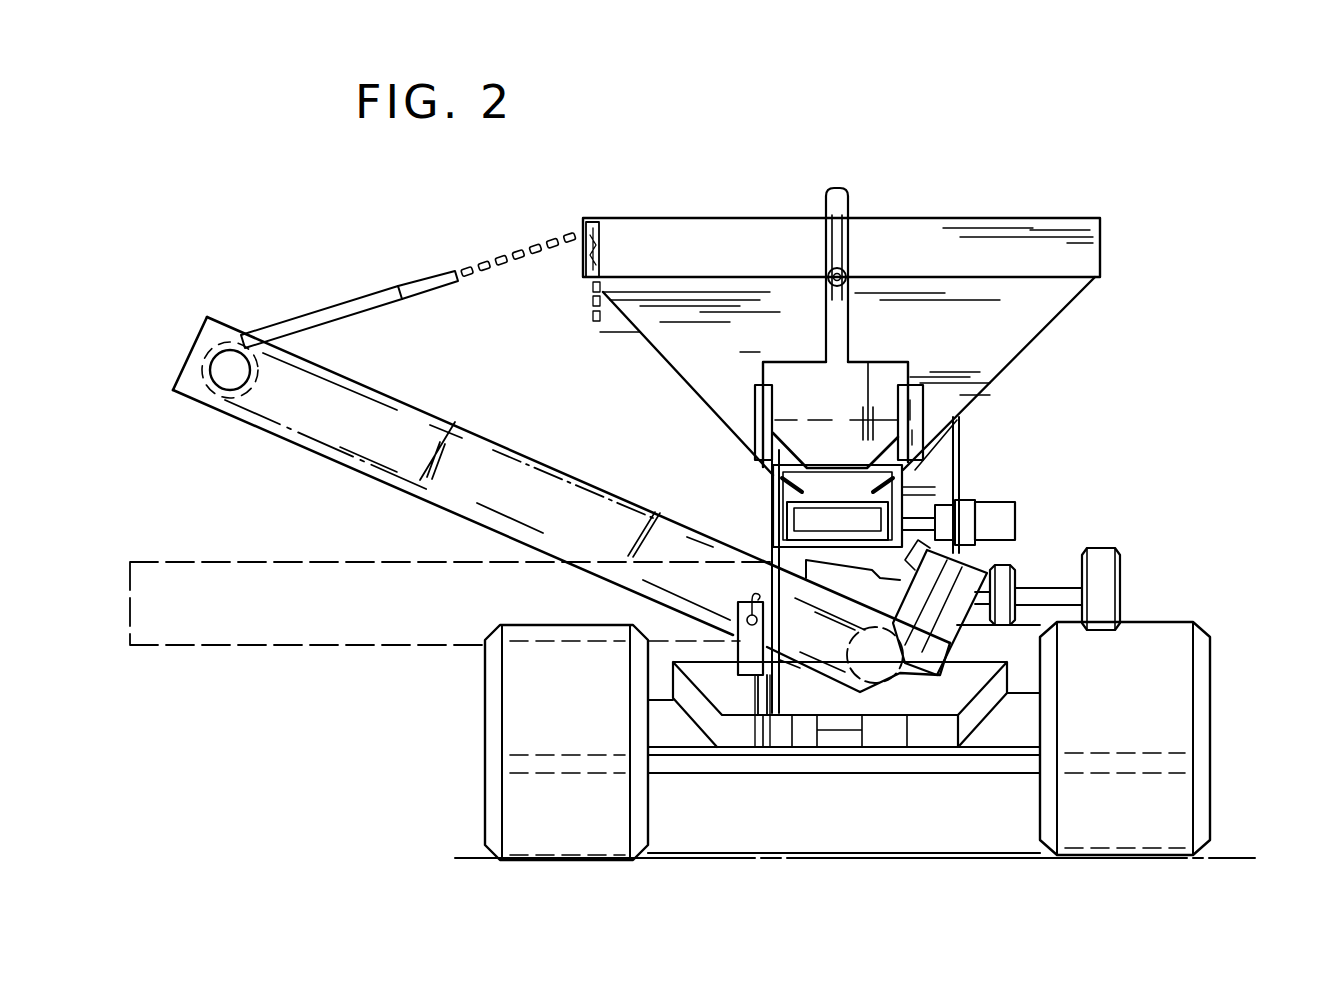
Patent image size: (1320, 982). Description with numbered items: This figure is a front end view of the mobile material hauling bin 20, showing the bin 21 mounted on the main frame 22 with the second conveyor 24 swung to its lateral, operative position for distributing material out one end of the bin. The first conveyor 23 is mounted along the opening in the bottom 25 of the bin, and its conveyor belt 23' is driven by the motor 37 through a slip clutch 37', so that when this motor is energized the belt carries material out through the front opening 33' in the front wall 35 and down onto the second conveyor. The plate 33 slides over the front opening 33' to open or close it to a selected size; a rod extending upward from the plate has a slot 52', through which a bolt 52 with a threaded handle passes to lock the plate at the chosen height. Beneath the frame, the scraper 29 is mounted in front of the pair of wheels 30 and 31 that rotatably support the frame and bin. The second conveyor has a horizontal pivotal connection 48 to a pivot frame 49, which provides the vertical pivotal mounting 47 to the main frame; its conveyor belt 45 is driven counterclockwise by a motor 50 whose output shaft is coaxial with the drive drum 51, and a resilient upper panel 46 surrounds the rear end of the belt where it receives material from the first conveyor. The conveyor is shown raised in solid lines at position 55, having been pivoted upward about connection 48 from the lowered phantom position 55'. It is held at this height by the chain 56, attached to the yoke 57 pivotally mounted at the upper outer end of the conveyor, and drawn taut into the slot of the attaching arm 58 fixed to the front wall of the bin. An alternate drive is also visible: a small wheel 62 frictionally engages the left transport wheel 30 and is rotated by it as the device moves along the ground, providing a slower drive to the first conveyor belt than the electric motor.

The mobile material hauling bin 20 is at (742, 216).
The bin 21 is at (946, 217).
The main frame 22 is at (940, 760).
The first conveyor 23 is at (813, 506).
The conveyor belt 23' is at (955, 473).
The second conveyor 24 is at (562, 448).
The bottom of the bin 25 is at (960, 433).
The scraper 29 is at (705, 750).
The left transport wheel 30 is at (487, 742).
The wheel 31 is at (1215, 652).
The plate 33 is at (844, 385).
The front opening 33' is at (836, 380).
The front wall 35 is at (667, 342).
The motor 37 is at (1023, 516).
The slip clutch 37' is at (978, 503).
The conveyor belt 45 is at (513, 434).
The resilient upper panel 46 is at (960, 622).
The pivotal mounting 47 is at (762, 760).
The horizontal pivotal connection 48 is at (750, 601).
The pivot frame 49 is at (771, 650).
The motor 50 is at (242, 372).
The drive roller or drum 51 is at (201, 408).
The bolt 52 is at (859, 275).
The slot 52' is at (811, 257).
The raised conveyor position 55 is at (561, 504).
The phantom conveyor position 55' is at (450, 583).
The chain 56 is at (507, 263).
The yoke 57 is at (375, 296).
The attaching arm 58 is at (584, 229).
The small wheel 62 is at (1121, 565).